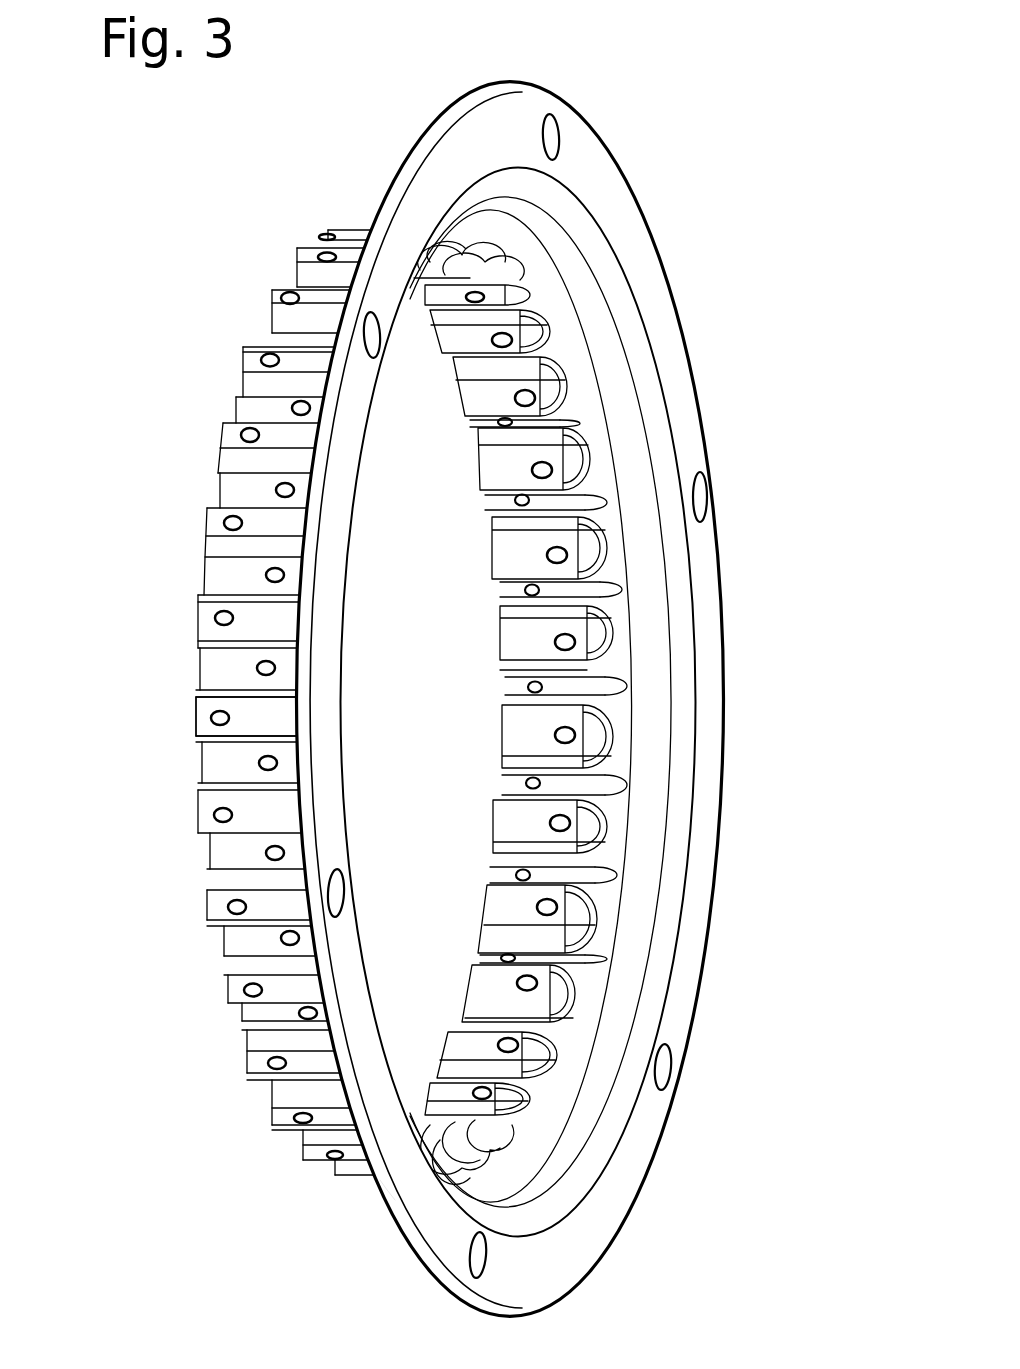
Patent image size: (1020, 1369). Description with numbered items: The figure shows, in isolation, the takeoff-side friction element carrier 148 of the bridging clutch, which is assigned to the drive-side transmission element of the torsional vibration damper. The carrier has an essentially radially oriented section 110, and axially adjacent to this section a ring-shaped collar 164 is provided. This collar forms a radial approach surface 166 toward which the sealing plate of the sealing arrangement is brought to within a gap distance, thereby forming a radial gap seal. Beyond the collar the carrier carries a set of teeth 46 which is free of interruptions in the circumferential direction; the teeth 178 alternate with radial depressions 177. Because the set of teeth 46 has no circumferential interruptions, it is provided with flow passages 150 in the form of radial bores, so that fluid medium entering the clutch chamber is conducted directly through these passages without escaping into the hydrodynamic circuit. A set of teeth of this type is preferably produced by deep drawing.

The takeoff-side friction element carrier 148 is at (613, 197).
The radial depressions 177 is at (260, 413).
The set of teeth 46 is at (230, 440).
The teeth 178 is at (283, 437).
The flow passages 150 is at (270, 580).
The radial approach surface 166 is at (290, 698).
The ring-shaped collar 164 is at (623, 712).
The radially oriented section 110 is at (443, 1243).